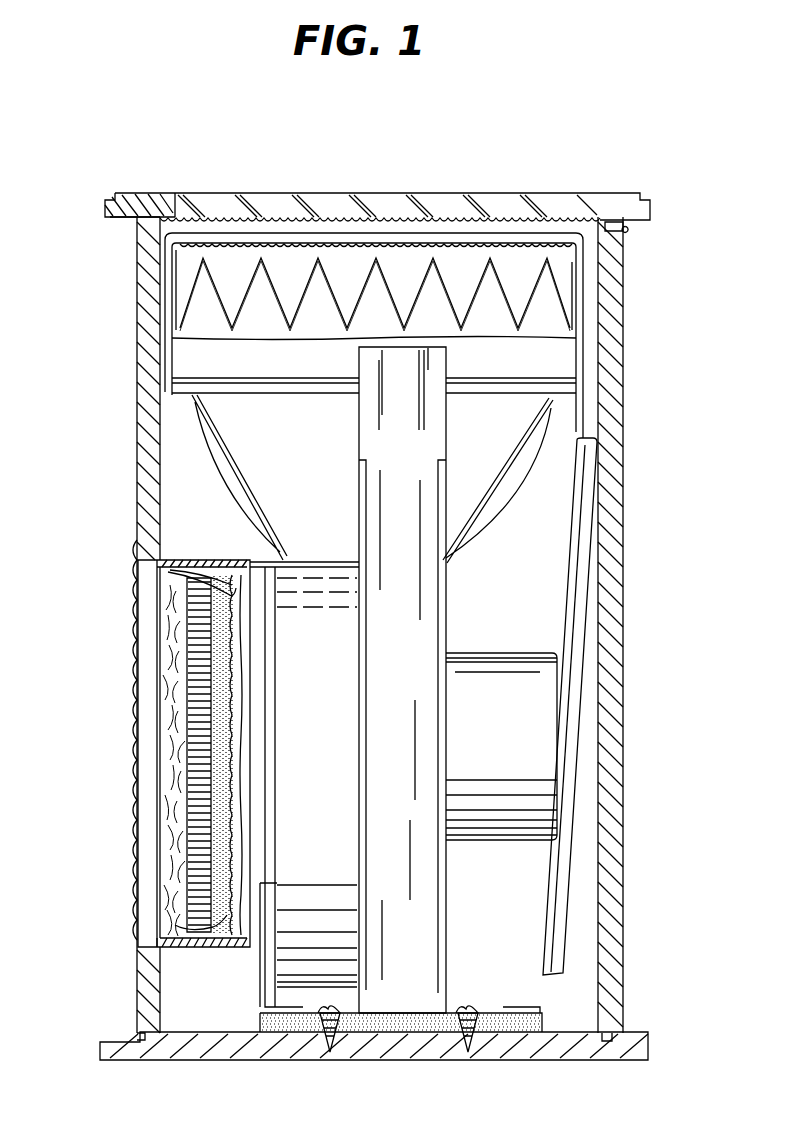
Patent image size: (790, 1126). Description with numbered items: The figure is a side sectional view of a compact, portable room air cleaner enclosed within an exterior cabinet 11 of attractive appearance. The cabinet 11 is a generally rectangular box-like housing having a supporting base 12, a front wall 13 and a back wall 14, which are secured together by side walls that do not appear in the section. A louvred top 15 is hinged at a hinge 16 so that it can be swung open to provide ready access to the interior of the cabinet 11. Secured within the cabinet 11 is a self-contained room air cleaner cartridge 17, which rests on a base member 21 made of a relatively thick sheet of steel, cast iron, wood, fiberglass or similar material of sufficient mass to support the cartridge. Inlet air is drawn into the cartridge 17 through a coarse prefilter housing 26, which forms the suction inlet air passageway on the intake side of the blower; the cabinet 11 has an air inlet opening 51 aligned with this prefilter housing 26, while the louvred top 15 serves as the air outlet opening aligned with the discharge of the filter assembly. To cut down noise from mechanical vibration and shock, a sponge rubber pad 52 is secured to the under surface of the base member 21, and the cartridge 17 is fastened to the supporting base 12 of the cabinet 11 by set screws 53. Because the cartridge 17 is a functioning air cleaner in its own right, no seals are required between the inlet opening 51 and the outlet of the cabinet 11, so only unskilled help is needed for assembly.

The exterior cabinet 11 is at (683, 289).
The supporting base 12 is at (382, 1051).
The front wall 13 is at (613, 424).
The back wall 14 is at (150, 433).
The louvred top 15 is at (156, 169).
The hinge 16 is at (628, 229).
The room air cleaner cartridge 17 is at (506, 612).
The base member 21 is at (443, 1023).
The coarse prefilter housing 26 is at (203, 560).
The air inlet opening 51 is at (132, 800).
The sponge rubber pad 52 is at (542, 1027).
The set screws 53 is at (323, 1007).